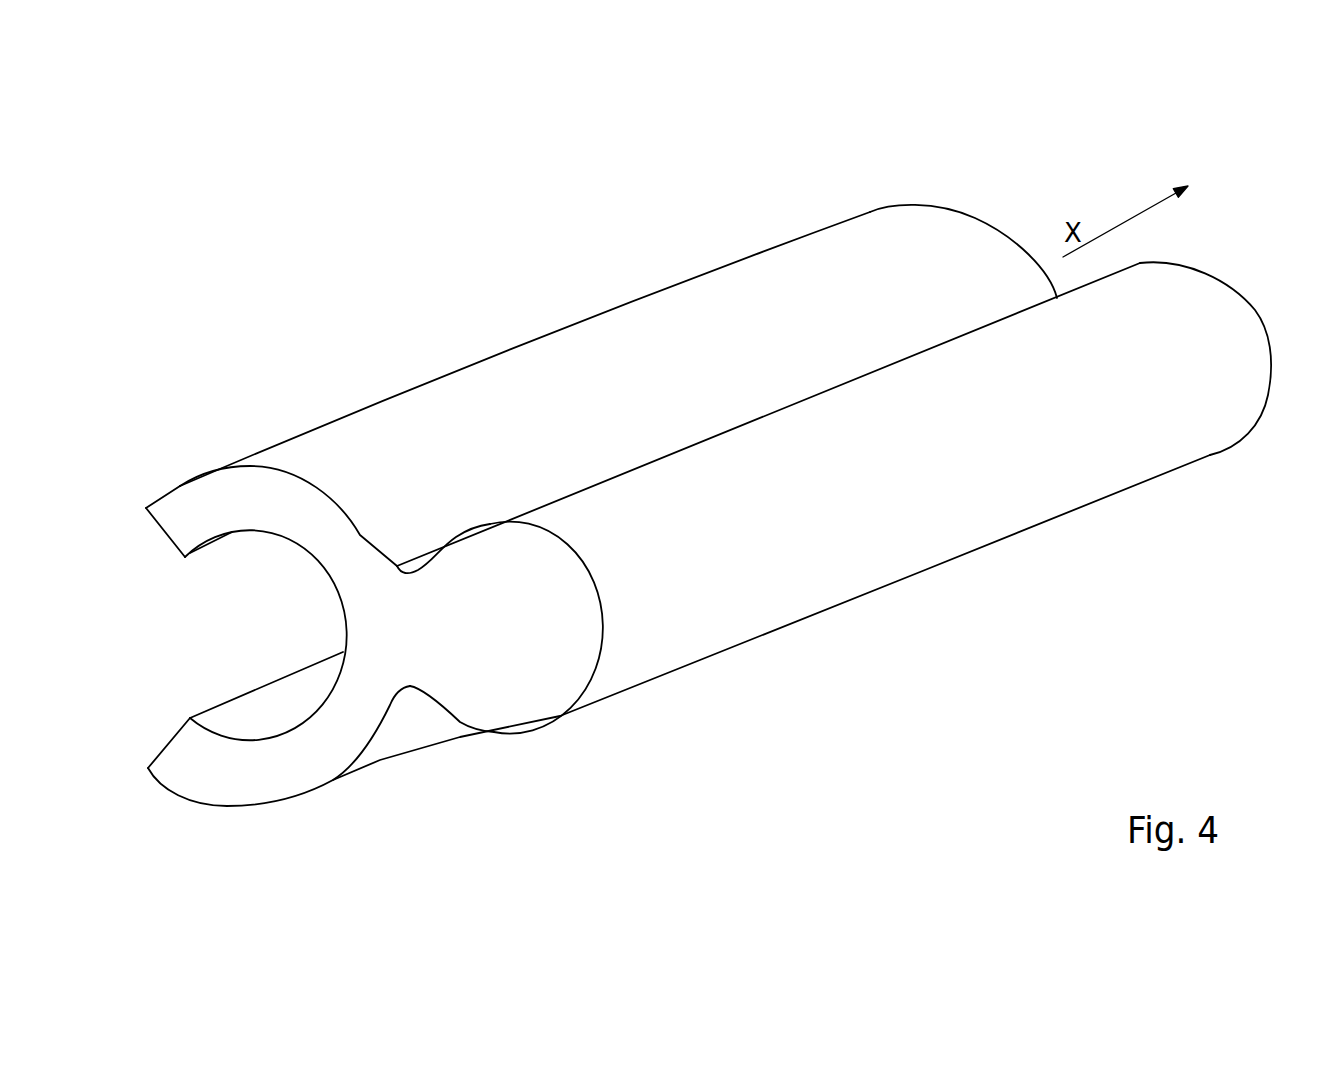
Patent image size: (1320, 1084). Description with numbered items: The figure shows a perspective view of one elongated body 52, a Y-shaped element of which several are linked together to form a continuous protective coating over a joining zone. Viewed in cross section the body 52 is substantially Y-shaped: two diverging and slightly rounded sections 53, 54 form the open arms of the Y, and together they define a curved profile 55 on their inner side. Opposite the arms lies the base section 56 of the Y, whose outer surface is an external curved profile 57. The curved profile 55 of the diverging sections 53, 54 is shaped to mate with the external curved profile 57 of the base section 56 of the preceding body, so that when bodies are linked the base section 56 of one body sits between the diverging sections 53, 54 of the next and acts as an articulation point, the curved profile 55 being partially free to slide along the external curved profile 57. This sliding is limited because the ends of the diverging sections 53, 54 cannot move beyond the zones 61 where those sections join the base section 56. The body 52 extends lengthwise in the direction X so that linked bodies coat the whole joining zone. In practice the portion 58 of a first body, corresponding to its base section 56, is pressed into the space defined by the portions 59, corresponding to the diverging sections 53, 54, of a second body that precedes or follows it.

The elongated body 52 is at (452, 204).
The diverging section 53 is at (241, 500).
The diverging section 54 is at (242, 782).
The curved profile 55 is at (347, 627).
The base section 56 is at (682, 680).
The external curved profile 57 is at (605, 608).
The portion 58 is at (869, 480).
The portion 59 is at (587, 388).
The zone 61 is at (408, 577).